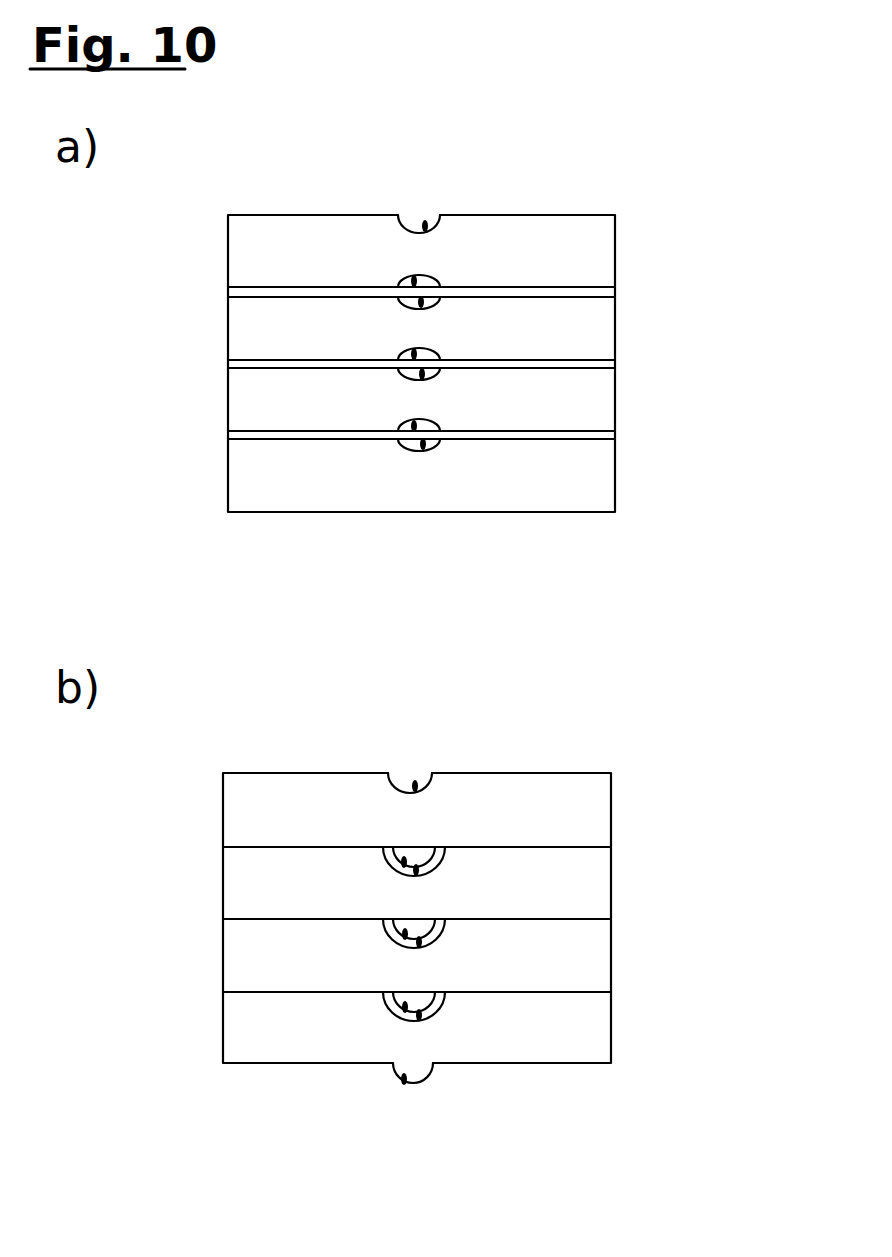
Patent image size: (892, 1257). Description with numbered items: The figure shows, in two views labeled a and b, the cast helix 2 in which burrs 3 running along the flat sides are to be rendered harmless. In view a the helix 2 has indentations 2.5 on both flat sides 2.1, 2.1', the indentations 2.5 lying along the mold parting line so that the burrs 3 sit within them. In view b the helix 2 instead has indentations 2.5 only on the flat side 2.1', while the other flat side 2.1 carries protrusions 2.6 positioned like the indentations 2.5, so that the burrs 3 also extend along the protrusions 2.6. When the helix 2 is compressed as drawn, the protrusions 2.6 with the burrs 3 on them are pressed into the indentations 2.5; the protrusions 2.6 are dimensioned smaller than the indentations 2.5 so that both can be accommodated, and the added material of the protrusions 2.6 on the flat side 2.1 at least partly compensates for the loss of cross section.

The helix 2 is at (170, 277).
The flat side 2.1 is at (528, 517).
The flat side 2.1' is at (528, 605).
The indentations 2.5 is at (415, 283).
The protrusions 2.6 is at (403, 848).
The burrs 3 is at (420, 297).